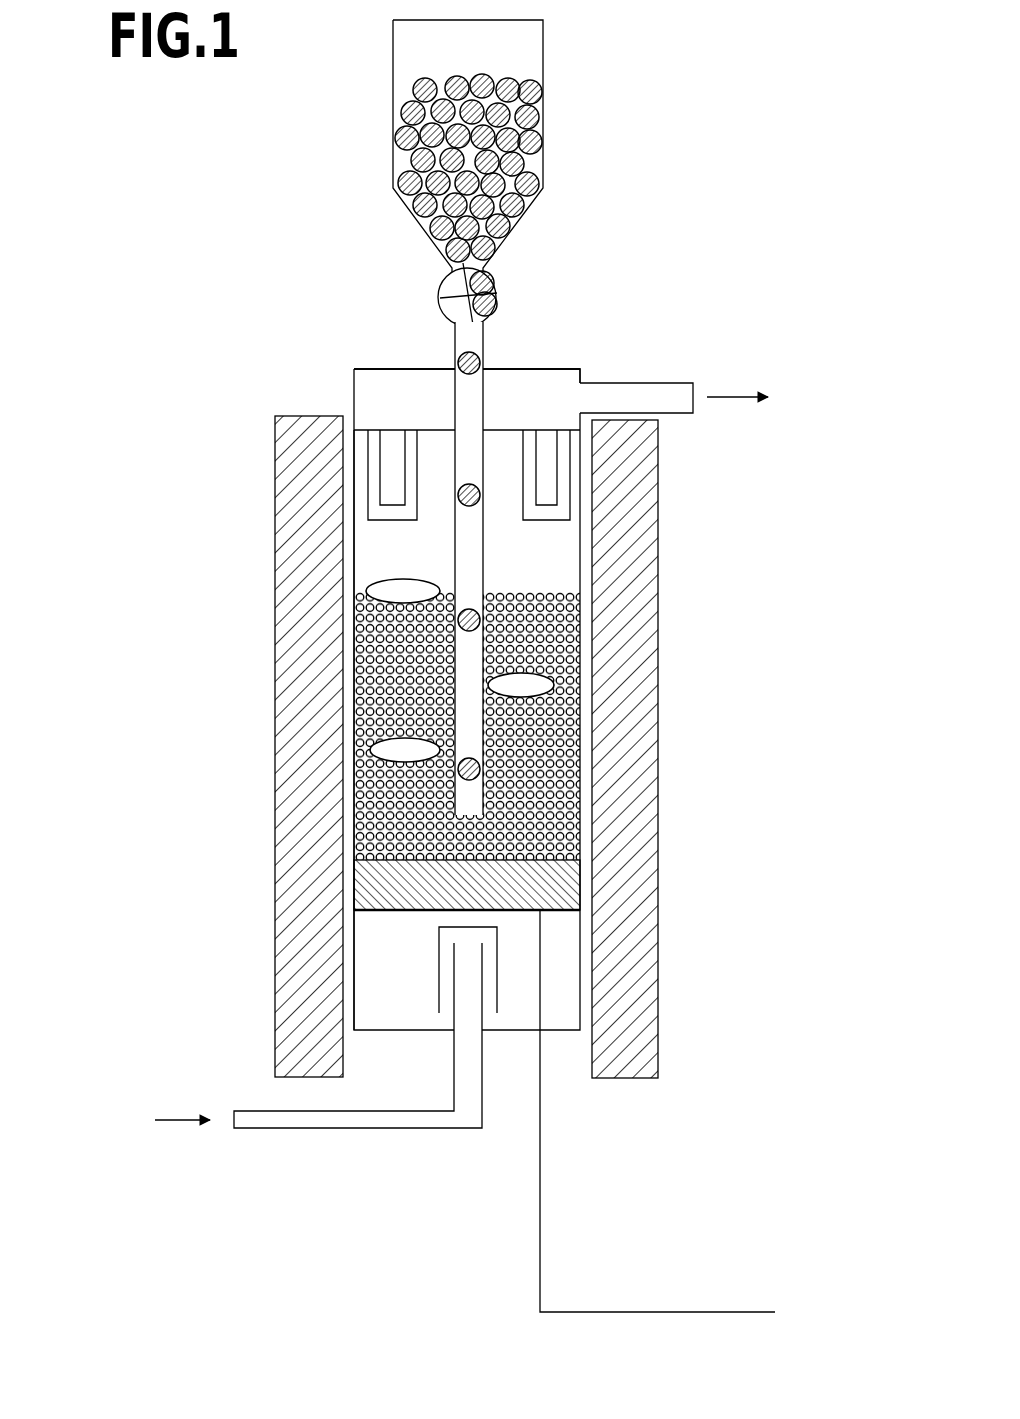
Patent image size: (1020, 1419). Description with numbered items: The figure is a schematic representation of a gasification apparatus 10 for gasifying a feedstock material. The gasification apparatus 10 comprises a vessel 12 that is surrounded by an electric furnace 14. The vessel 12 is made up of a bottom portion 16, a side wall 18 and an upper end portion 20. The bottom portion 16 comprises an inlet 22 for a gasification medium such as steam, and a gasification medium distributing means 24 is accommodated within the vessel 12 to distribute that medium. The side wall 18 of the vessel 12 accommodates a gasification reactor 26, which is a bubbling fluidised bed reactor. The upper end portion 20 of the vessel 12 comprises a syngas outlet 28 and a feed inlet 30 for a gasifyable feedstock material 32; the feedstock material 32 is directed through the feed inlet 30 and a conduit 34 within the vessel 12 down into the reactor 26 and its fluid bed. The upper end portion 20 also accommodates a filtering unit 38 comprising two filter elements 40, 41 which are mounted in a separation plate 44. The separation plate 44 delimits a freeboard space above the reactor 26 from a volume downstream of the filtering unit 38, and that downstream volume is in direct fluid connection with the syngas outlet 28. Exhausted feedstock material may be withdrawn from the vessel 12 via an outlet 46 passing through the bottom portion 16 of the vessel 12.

The gasification apparatus 10 is at (658, 234).
The vessel 12 is at (548, 357).
The electric furnace 14 is at (628, 766).
The bottom portion 16 is at (557, 1048).
The side wall 18 is at (352, 740).
The upper end portion 20 is at (320, 372).
The inlet 22 is at (454, 1070).
The gasification medium distributing means 24 is at (439, 957).
The gasification reactor 26 is at (555, 627).
The syngas outlet 28 is at (663, 382).
The feed inlet 30 is at (480, 354).
The feedstock material 32 is at (544, 75).
The conduit 34 is at (483, 548).
The filtering unit 38 is at (556, 404).
The filter element 40 is at (568, 474).
The filter element 41 is at (366, 492).
The separation plate 44 is at (430, 428).
The outlet 46 is at (538, 1236).